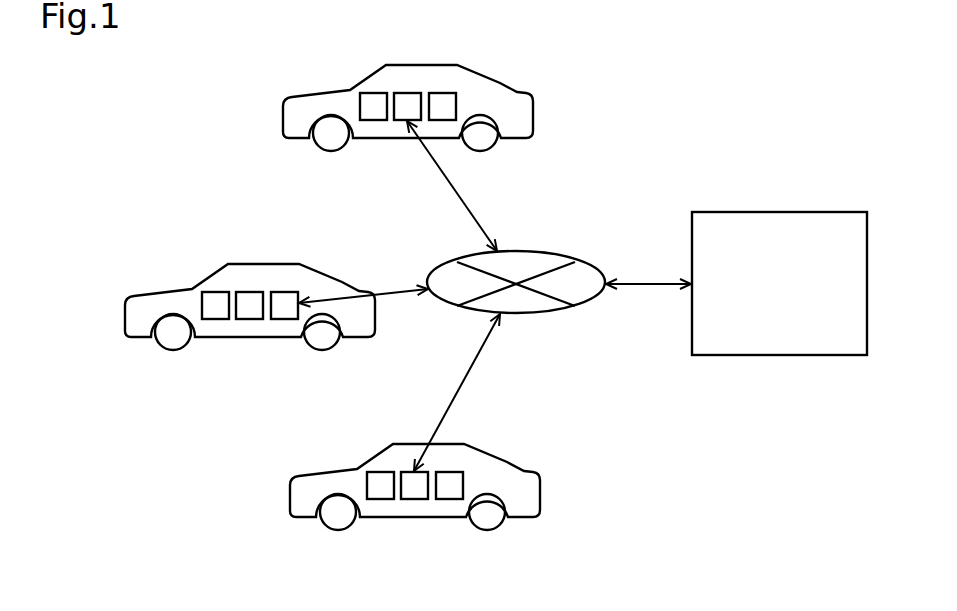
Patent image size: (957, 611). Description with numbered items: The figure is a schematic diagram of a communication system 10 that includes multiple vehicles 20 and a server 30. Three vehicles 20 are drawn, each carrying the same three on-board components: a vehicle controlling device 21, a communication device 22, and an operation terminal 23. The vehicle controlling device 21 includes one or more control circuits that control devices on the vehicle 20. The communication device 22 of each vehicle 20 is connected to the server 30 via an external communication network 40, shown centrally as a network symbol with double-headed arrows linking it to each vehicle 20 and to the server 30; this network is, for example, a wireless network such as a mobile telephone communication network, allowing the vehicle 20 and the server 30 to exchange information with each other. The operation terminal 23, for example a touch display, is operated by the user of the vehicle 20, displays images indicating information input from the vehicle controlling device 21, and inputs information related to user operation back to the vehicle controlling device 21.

The communication system 10 is at (653, 82).
The vehicle 20 is at (315, 95).
The vehicle controlling device 21 is at (377, 92).
The communication device 22 is at (408, 92).
The operation terminal 23 is at (440, 92).
The server 30 is at (822, 212).
The external communication network 40 is at (445, 265).